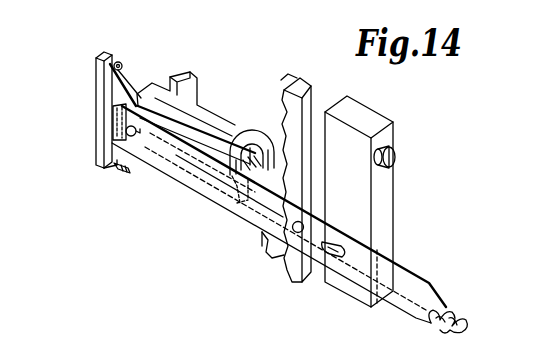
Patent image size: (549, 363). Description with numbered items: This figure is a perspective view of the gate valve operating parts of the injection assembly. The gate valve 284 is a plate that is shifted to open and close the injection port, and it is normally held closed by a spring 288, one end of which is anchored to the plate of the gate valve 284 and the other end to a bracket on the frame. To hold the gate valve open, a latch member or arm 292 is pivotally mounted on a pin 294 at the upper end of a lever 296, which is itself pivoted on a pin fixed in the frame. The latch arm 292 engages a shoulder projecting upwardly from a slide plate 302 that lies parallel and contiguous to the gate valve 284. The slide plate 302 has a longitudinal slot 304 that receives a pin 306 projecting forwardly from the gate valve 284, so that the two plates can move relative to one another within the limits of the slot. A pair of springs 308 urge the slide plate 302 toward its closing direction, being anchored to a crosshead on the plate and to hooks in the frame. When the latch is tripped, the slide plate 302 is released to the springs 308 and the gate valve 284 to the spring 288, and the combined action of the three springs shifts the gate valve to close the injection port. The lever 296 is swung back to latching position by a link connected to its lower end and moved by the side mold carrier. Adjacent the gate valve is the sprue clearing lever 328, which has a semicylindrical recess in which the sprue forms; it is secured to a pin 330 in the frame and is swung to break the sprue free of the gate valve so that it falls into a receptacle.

The gate valve 284 is at (396, 278).
The spring 288 is at (487, 309).
The latch member or arm 292 is at (196, 116).
The pin 294 is at (233, 152).
The lever 296 is at (269, 178).
The slide plate 302 is at (106, 73).
The longitudinal slot 304 is at (112, 121).
The pin 306 is at (127, 133).
The springs 308 is at (142, 57).
The sprue clearing lever 328 is at (320, 117).
The pin 330 is at (421, 145).